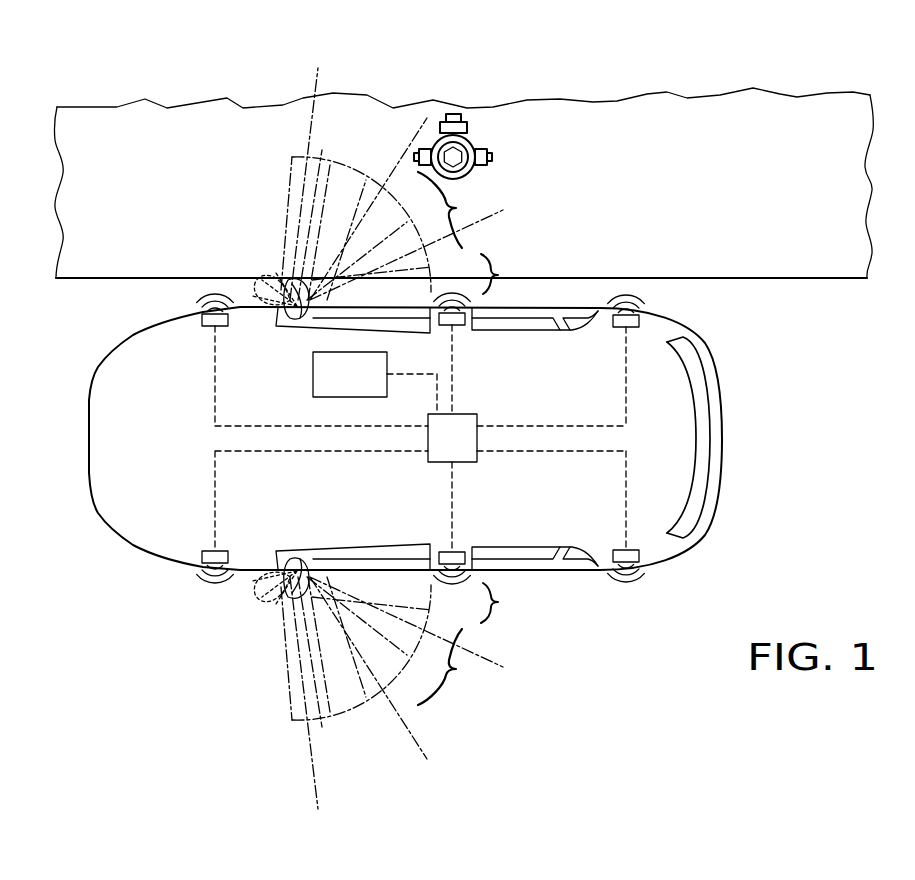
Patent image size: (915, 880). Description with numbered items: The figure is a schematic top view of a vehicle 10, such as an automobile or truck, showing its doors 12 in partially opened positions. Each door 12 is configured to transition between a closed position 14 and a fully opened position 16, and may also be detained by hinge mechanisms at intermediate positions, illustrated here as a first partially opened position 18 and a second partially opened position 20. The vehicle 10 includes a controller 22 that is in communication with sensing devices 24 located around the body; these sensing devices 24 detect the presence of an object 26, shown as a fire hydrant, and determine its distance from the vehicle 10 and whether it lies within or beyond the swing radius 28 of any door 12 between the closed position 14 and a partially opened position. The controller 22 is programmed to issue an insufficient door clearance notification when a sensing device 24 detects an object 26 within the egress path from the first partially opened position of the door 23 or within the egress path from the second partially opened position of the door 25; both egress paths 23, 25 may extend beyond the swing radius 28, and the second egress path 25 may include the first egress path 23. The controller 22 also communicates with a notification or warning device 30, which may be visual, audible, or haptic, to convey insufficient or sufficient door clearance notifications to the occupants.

The vehicle 10 is at (710, 168).
The door 12 is at (212, 698).
The closed position 14 is at (388, 331).
The fully opened position 16 is at (342, 439).
The first partially opened position 18 is at (369, 439).
The second partially opened position 20 is at (396, 438).
The controller 22 is at (443, 463).
The egress path from the first partially opened position of the door 23 is at (505, 439).
The sensing device 24 is at (208, 327).
The egress path from the second partially opened position of the door 25 is at (449, 438).
The object 26 is at (478, 140).
The swing radius 28 is at (368, 441).
The notification or warning device 30 is at (313, 386).